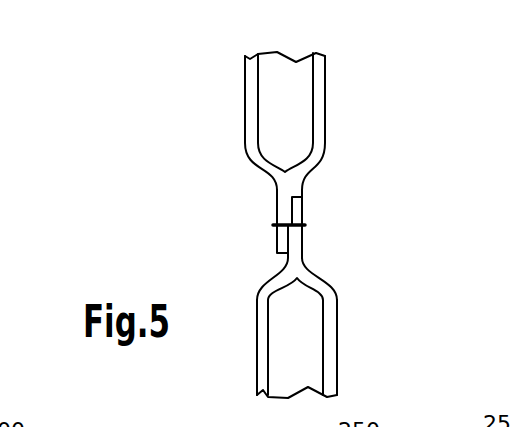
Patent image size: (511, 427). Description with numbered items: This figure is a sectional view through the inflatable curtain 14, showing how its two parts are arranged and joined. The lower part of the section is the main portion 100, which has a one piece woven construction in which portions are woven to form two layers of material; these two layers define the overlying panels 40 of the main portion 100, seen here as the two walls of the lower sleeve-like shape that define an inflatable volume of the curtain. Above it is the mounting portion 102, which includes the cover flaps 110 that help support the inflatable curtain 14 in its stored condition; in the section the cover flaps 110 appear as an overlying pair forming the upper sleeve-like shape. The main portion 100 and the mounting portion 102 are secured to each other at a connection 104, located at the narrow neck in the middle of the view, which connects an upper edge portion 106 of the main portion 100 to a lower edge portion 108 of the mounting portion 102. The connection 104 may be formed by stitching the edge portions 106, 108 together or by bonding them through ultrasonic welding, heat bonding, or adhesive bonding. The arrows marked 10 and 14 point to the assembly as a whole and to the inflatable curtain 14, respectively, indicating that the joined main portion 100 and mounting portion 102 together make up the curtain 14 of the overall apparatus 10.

The connector assembly 10 is at (178, 58).
The inflatable curtain 14 is at (188, 88).
The overlying panels 40 is at (252, 122).
The main portion 100 is at (333, 318).
The mounting portion 102 is at (315, 78).
The connection 104 is at (303, 225).
The upper edge portion 106 is at (300, 239).
The lower edge portion 108 is at (285, 210).
The cover flaps 110 is at (315, 118).